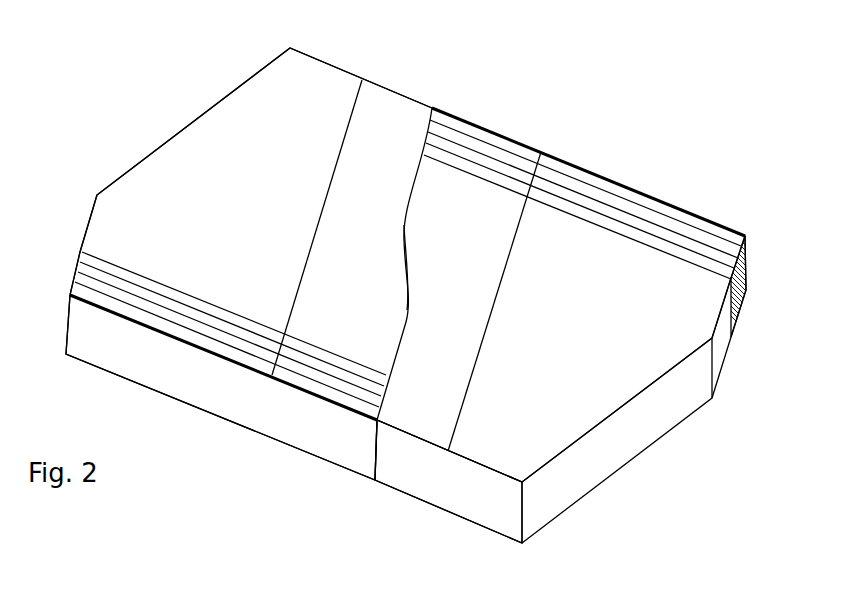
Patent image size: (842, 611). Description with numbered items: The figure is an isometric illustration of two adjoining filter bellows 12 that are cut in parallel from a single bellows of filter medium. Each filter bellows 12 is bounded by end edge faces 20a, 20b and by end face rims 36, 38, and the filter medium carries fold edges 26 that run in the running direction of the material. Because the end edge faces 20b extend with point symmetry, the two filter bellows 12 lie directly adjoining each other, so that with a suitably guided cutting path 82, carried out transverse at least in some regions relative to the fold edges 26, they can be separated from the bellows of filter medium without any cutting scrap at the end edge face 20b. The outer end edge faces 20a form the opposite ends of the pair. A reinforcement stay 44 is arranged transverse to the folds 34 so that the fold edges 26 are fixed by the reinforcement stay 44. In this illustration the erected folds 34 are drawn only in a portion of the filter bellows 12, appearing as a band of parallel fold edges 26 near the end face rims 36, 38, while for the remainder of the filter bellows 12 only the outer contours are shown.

The filter bellows 12 is at (273, 140).
The end edge face 20a is at (121, 155).
The end edge face 20b is at (397, 247).
The fold edges 26 is at (502, 152).
The folds 34 is at (724, 245).
The end face rim 36 is at (430, 107).
The end face rim 38 is at (177, 375).
The reinforcement stay 44 is at (305, 262).
The cutting path 82 is at (403, 236).